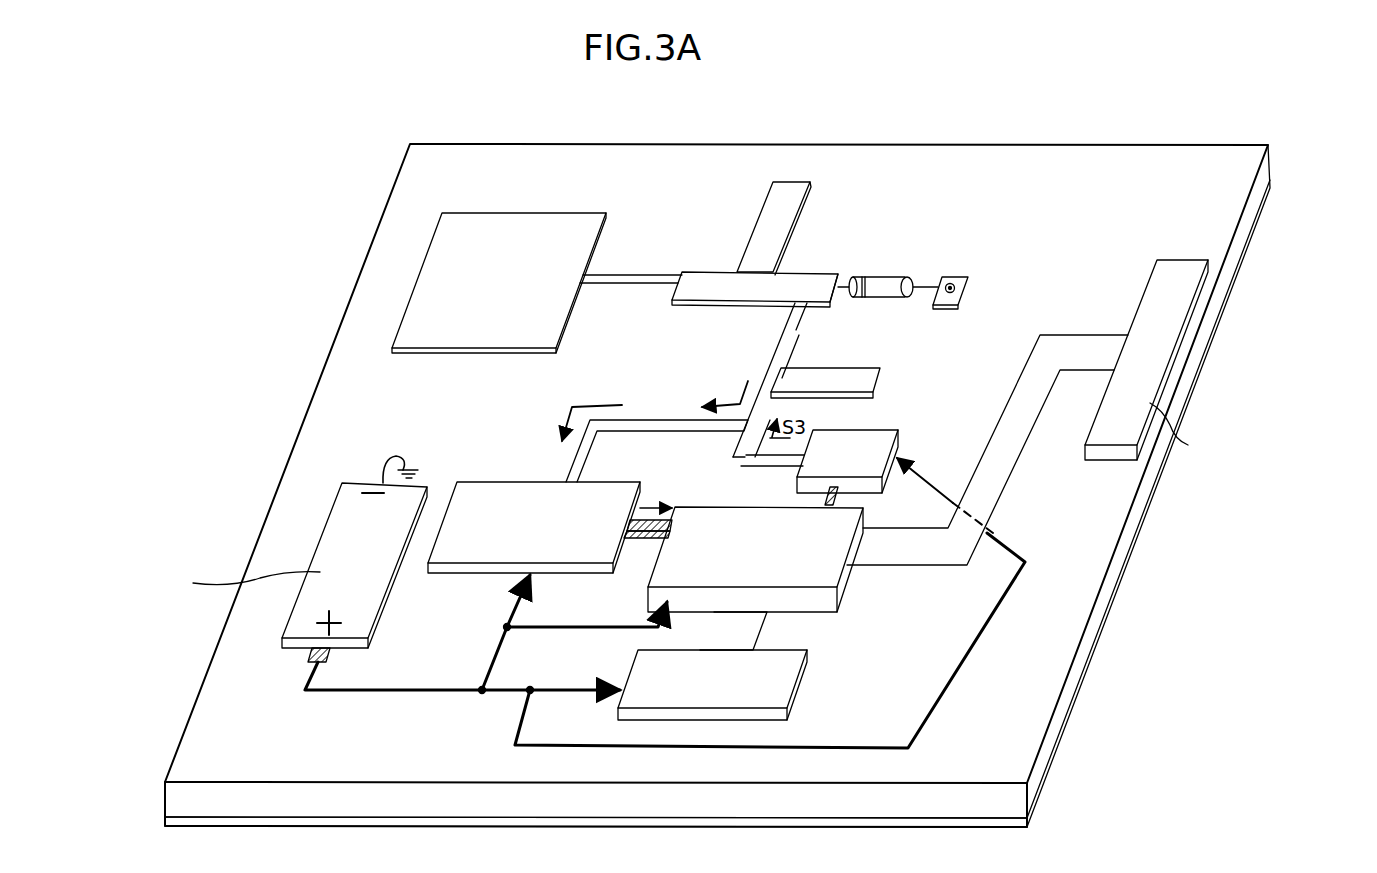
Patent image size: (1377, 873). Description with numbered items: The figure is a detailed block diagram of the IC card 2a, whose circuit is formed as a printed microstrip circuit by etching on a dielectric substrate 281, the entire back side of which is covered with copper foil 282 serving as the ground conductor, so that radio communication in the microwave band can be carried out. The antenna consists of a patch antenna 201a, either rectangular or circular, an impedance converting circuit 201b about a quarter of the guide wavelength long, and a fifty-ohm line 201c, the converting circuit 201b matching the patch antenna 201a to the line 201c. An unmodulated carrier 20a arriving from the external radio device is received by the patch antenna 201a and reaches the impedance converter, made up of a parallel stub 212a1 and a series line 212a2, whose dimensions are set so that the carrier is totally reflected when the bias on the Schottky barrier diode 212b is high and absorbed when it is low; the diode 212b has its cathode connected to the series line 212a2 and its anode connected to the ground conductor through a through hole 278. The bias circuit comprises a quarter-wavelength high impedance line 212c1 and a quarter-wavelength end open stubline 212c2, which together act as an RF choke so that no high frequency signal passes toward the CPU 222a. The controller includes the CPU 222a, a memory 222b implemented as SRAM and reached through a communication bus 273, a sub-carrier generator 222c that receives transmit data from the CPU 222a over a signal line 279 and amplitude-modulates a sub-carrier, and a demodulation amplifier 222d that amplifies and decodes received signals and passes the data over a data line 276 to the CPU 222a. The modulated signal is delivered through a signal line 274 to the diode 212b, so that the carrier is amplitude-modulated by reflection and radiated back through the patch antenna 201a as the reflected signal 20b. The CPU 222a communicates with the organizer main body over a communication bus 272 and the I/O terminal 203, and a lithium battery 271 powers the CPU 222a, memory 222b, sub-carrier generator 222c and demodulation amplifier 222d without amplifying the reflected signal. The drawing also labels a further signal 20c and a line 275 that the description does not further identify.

The IC card 2a is at (1130, 120).
The unmodulated carrier 20a is at (420, 212).
The reflected signal 20b is at (410, 265).
The modulated radio wave 20c is at (400, 297).
The patch antenna 201a is at (488, 224).
The impedance converting circuit 201b is at (608, 274).
The 50 Ω line 201c is at (690, 278).
The parallel stub 212a1 is at (790, 207).
The series line 212a2 is at (805, 283).
The Schottky barrier diode 212b is at (888, 283).
The through hole 278 is at (962, 280).
The I/O terminal 203 is at (1163, 268).
The high impedance line 212c1 is at (790, 325).
The end open stubline 212c2 is at (875, 372).
The signal line 275 is at (630, 422).
The sub-carrier generator 222c is at (872, 430).
The lithium battery 271 is at (345, 497).
The demodulation amplifier 222d is at (492, 484).
The signal line 274 is at (760, 458).
The signal line 279 is at (840, 497).
The communication bus 272 is at (965, 497).
The data line 276 is at (650, 540).
The CPU 222a is at (820, 565).
The communication bus 273 is at (745, 625).
The memory 222b is at (768, 678).
The dielectric substrate 281 is at (1030, 702).
The copper foil 282 is at (1028, 822).